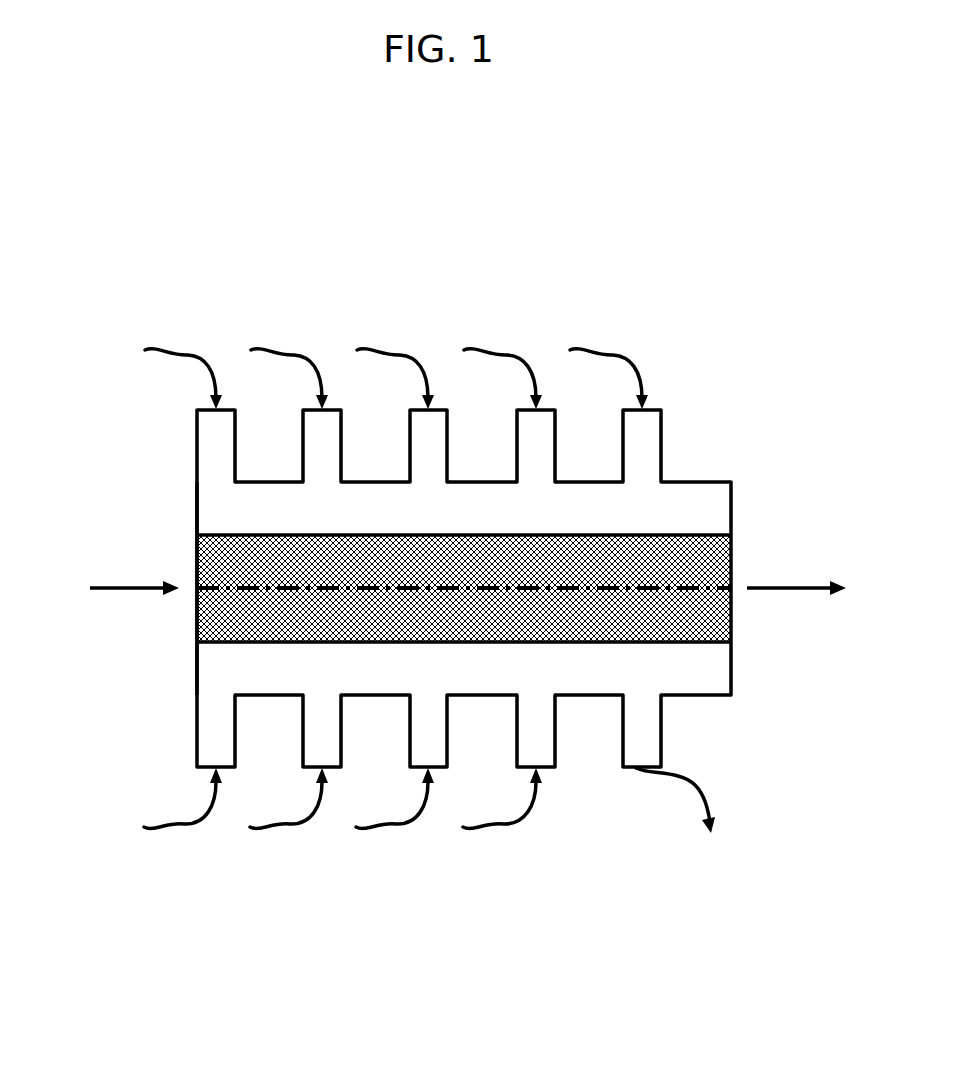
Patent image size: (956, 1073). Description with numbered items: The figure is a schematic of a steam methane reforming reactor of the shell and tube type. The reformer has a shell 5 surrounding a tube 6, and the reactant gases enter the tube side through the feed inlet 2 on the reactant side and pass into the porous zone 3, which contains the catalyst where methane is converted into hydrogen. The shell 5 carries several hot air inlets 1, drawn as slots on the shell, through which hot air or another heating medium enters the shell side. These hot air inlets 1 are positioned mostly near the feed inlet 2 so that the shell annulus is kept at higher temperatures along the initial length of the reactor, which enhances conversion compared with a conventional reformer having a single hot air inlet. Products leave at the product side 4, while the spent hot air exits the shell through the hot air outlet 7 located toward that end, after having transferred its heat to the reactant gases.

The hot air inlets 1 is at (376, 350).
The feed inlet 2 is at (105, 585).
The porous zone 3 is at (695, 555).
The product side 4 is at (765, 580).
The shell 5 is at (685, 668).
The tube 6 is at (193, 560).
The hot air outlet 7 is at (693, 793).